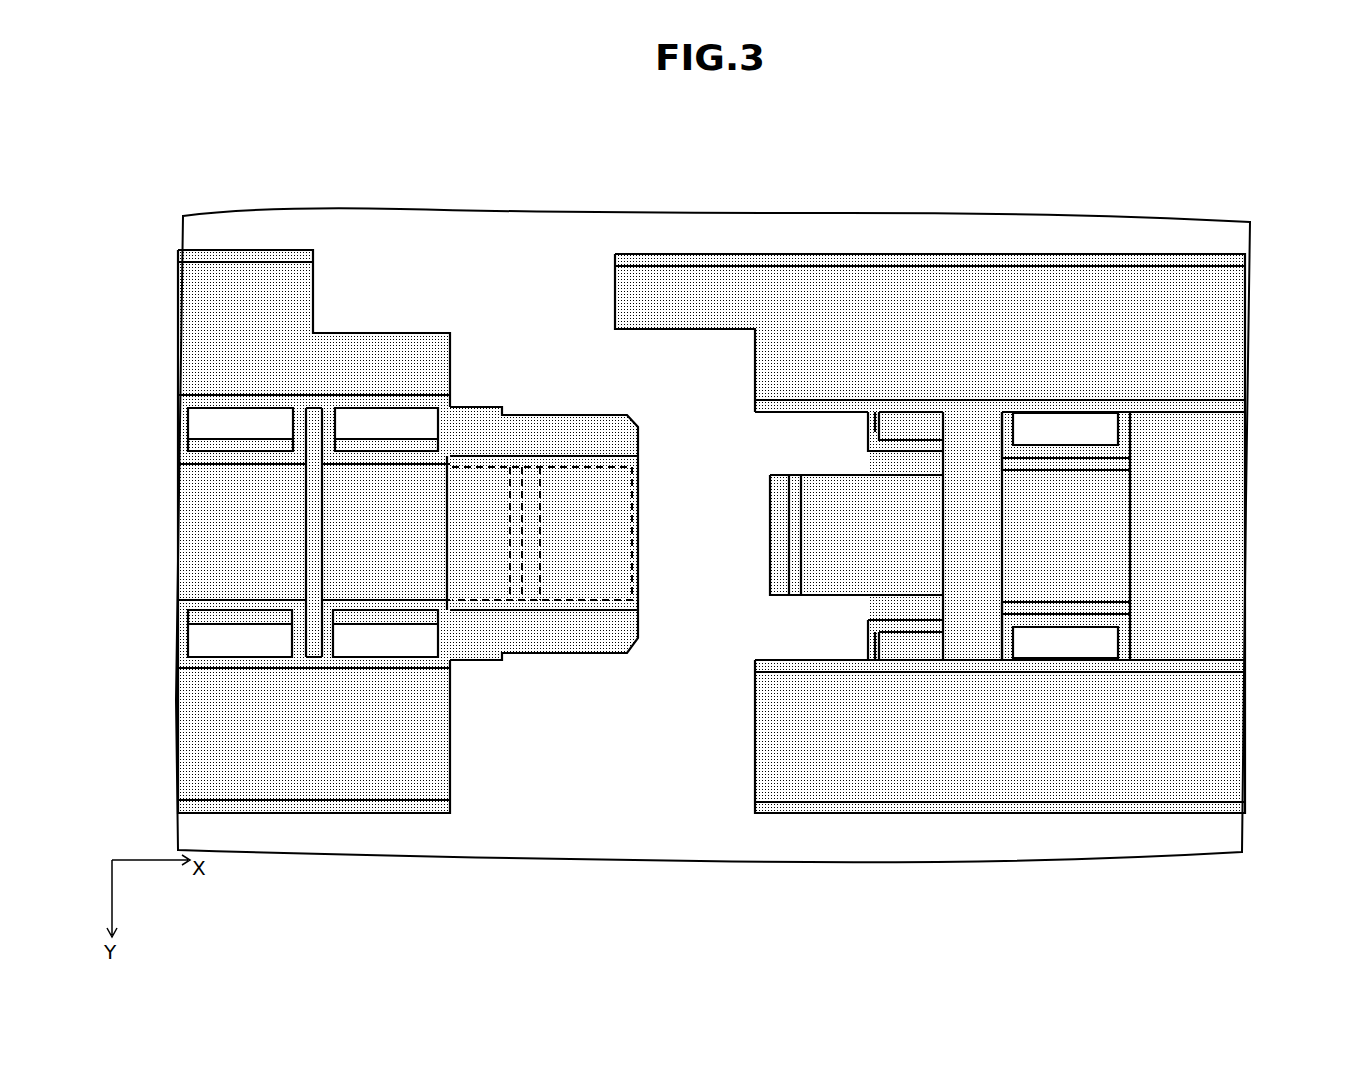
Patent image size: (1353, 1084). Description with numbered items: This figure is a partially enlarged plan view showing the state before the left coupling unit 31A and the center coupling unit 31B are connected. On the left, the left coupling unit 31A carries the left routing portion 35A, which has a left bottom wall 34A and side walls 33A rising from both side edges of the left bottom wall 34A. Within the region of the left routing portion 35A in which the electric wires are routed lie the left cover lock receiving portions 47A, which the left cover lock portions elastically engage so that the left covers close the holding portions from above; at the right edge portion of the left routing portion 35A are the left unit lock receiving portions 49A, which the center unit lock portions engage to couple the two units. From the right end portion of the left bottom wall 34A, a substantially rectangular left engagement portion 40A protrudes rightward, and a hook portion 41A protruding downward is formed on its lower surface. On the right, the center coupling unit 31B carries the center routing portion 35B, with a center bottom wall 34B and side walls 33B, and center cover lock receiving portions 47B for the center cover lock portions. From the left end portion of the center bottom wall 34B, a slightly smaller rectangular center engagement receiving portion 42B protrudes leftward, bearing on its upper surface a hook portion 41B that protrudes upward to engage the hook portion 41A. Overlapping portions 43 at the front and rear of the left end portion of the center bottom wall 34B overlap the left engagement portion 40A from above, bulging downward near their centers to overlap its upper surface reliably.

The left coupling unit 31A is at (212, 747).
The side walls 33A is at (241, 397).
The left cover lock receiving portions 47A is at (211, 447).
The left unit lock receiving portions 49A is at (363, 447).
The left routing portion 35A is at (212, 492).
The left bottom wall 34A is at (218, 537).
The left engagement portion 40A is at (548, 635).
The hook portion 41A is at (538, 516).
The center coupling unit 31B is at (1190, 752).
The side walls 33B is at (977, 405).
The center cover lock receiving portions 47B is at (1090, 447).
The overlapping portions 43 is at (876, 428).
The center routing portion 35B is at (1095, 493).
The center bottom wall 34B is at (1100, 547).
The center engagement receiving portion 42B is at (823, 553).
The hook portion 41B is at (790, 542).